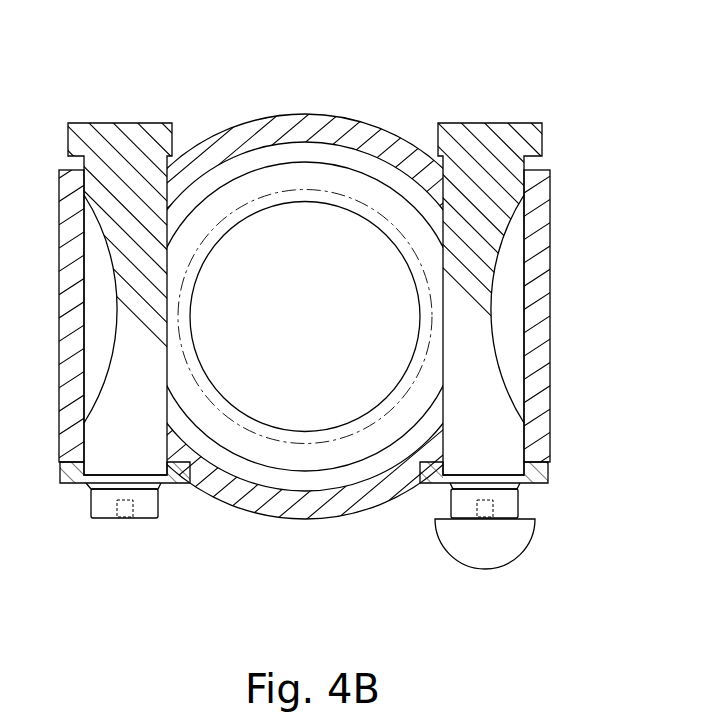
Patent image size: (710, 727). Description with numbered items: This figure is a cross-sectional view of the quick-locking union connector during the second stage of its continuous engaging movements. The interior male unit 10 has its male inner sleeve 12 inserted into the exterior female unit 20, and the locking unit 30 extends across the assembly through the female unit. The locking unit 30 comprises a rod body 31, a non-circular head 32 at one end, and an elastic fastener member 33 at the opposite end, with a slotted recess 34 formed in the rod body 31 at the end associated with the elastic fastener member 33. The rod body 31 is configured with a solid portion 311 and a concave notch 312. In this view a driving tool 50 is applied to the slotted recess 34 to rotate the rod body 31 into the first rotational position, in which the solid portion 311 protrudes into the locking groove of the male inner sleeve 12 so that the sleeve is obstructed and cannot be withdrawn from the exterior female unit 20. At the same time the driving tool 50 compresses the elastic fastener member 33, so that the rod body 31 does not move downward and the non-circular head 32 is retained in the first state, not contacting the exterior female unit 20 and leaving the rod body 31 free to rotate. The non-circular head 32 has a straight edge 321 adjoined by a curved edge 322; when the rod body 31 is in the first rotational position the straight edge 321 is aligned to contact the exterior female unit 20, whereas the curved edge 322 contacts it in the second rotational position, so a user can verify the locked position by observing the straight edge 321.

The interior male unit 10 is at (252, 156).
The male inner sleeve 12 is at (313, 175).
The exterior female unit 20 is at (280, 100).
The locking unit 30 is at (492, 262).
The rod body 31 is at (538, 439).
The solid portion 311 is at (477, 222).
The concave notch 312 is at (510, 327).
The non-circular head 32 is at (505, 132).
The straight edge 321 is at (437, 132).
The curved edge 322 is at (543, 138).
The elastic fastener member 33 is at (562, 469).
The slotted recess 34 is at (492, 502).
The driving tool 50 is at (507, 550).